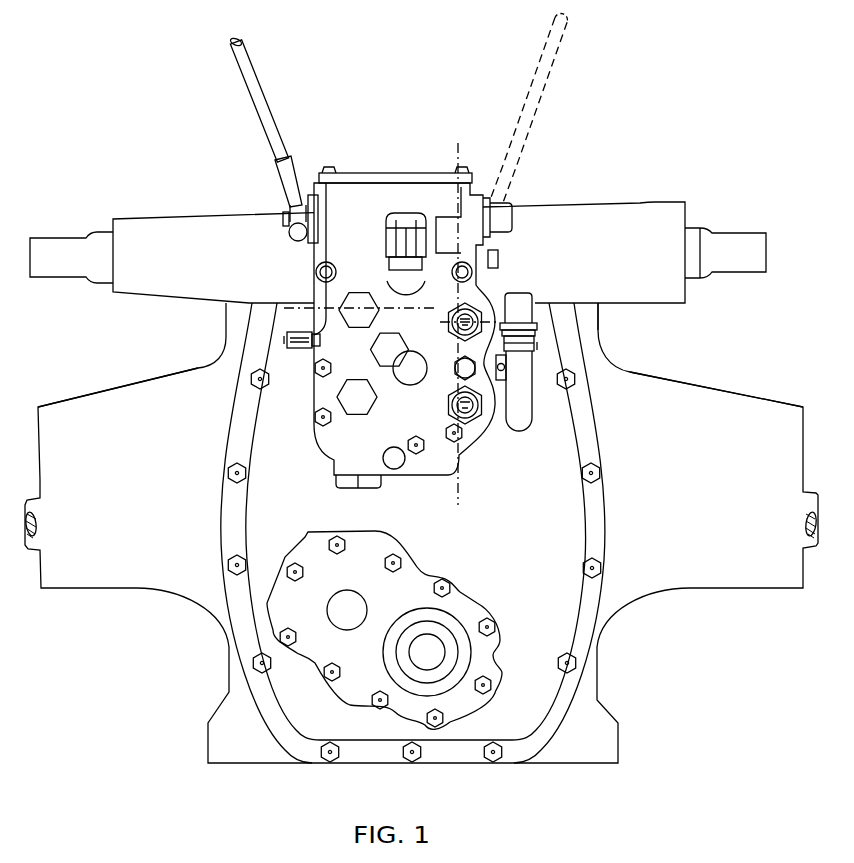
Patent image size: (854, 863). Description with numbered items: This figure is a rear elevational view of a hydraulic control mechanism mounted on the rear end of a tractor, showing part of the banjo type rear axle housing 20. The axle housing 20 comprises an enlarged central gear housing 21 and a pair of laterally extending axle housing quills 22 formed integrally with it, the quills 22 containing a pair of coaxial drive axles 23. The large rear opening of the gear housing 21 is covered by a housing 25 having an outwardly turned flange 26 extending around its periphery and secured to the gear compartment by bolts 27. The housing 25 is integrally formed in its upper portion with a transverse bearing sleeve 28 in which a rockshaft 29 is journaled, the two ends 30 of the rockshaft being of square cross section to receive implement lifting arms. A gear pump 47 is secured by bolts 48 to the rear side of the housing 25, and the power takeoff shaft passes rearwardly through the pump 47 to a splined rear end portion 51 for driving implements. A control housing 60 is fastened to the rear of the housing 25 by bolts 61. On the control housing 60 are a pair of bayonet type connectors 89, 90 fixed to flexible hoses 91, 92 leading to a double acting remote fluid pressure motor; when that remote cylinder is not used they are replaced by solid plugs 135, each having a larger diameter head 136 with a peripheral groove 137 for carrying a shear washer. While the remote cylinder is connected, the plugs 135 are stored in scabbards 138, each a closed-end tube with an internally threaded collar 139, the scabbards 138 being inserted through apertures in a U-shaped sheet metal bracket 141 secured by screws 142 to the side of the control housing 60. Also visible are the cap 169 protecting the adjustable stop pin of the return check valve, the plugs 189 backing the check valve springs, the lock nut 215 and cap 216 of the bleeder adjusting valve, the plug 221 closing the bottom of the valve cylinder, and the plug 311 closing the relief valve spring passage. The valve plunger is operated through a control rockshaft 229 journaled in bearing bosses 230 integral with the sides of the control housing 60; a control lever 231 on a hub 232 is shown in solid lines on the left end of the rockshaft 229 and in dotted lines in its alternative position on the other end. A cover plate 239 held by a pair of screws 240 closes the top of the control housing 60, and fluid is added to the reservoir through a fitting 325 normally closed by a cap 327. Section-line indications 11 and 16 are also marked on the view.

The section line 11- 11 is at (307, 336).
The section line 16- 16 is at (458, 143).
The rear axle housing 20 is at (669, 589).
The gear housing 21 is at (591, 343).
The axle housing quills 22 is at (112, 405).
The drive axles 23 is at (40, 534).
The housing 25 is at (510, 518).
The flange 26 is at (228, 505).
The bolts 27 is at (253, 383).
The bearing sleeve 28 is at (573, 213).
The rockshaft 29 is at (699, 240).
The rockshaft ends 30 is at (58, 250).
The gear pump 47 is at (384, 630).
The bolts 48 is at (487, 618).
The splined rear end portion 51 is at (427, 652).
The control housing 60 is at (388, 329).
The bolts 61 is at (313, 410).
The bayonet type connector 89 is at (479, 304).
The bayonet type connector 90 is at (449, 403).
The flexible hose 91 is at (456, 310).
The flexible hose 92 is at (471, 418).
The solid plug 135 is at (522, 288).
The head portion 136 is at (526, 302).
The groove 137 is at (534, 327).
The scabbard 138 is at (524, 412).
The internally threaded collar 139 is at (536, 340).
The sheet metal bracket 141 is at (537, 342).
The screws 142 is at (506, 368).
The cap 169 is at (392, 455).
The plug 189 is at (363, 316).
The lock nut 215 is at (309, 350).
The cap 216 is at (284, 340).
The plug 221 is at (356, 484).
The control rockshaft 229 is at (283, 221).
The bearing bosses 230 is at (318, 227).
The control lever 231 is at (253, 85).
The hub 232 is at (283, 200).
The cover plate 239 is at (357, 176).
The screws 240 is at (330, 168).
The plug 311 is at (407, 362).
The fitting 325 is at (391, 263).
The cap 327 is at (404, 217).